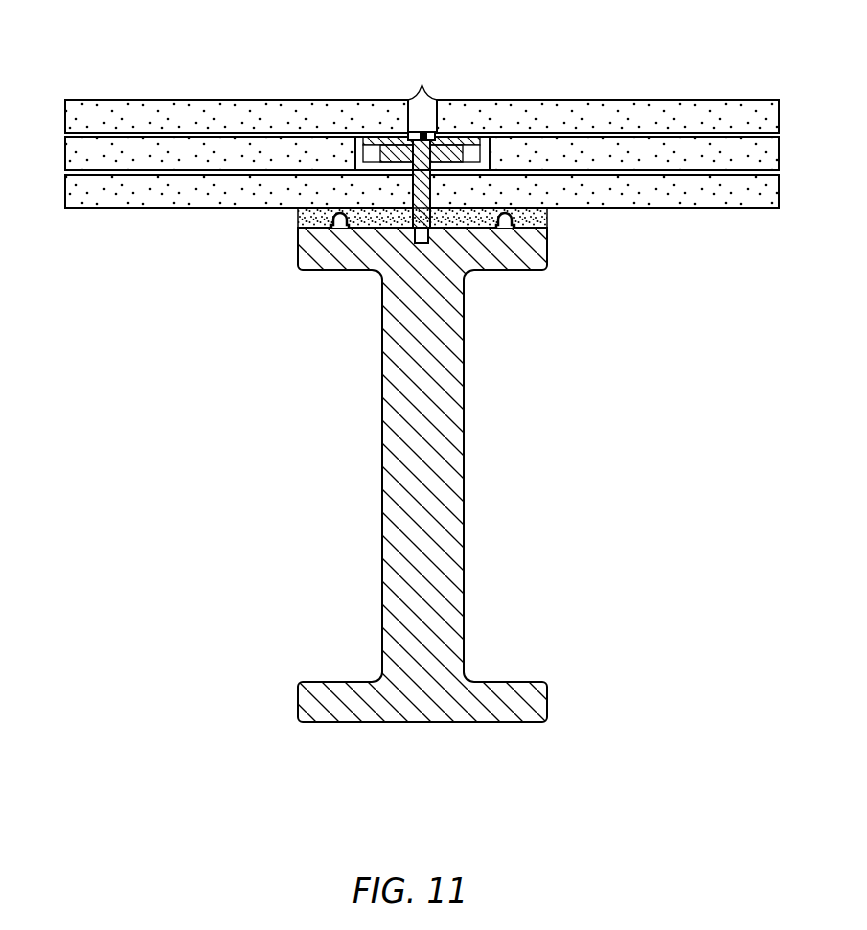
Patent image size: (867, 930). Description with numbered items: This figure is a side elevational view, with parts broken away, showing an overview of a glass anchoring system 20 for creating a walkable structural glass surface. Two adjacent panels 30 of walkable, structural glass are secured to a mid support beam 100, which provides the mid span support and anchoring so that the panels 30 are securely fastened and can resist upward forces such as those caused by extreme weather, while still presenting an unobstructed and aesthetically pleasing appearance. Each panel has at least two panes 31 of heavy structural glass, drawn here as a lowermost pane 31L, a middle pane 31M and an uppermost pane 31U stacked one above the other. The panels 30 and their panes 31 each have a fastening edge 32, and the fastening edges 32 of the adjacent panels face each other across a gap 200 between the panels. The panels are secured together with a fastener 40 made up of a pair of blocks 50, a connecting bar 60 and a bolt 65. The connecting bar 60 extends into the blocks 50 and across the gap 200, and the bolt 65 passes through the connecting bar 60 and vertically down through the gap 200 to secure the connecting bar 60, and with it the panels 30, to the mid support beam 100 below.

The glass anchoring system 20 is at (436, 59).
The panels 30 is at (100, 231).
The panes 31 is at (779, 131).
The uppermost pane 31U is at (65, 118).
The middle pane 31M is at (65, 155).
The lowermost pane 31L is at (65, 193).
The fastening edge 32 is at (423, 82).
The fastener 40 is at (400, 220).
The blocks 50 is at (370, 146).
The connecting bar 60 is at (398, 143).
The bolt 65 is at (432, 190).
The mid support beam 100 is at (464, 388).
The gap 200 is at (438, 118).